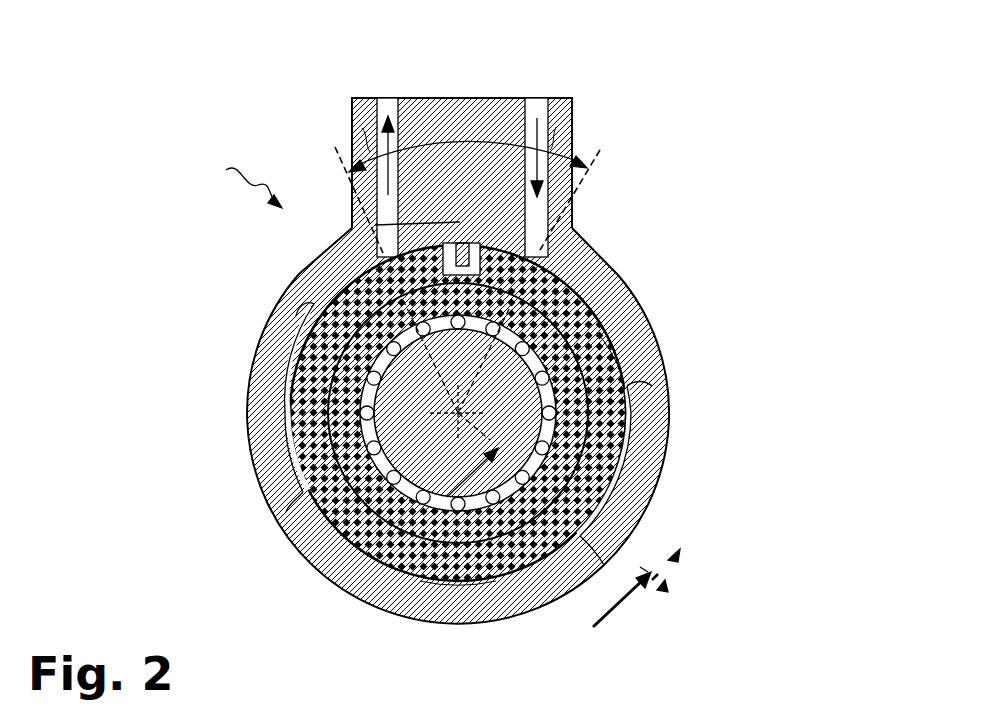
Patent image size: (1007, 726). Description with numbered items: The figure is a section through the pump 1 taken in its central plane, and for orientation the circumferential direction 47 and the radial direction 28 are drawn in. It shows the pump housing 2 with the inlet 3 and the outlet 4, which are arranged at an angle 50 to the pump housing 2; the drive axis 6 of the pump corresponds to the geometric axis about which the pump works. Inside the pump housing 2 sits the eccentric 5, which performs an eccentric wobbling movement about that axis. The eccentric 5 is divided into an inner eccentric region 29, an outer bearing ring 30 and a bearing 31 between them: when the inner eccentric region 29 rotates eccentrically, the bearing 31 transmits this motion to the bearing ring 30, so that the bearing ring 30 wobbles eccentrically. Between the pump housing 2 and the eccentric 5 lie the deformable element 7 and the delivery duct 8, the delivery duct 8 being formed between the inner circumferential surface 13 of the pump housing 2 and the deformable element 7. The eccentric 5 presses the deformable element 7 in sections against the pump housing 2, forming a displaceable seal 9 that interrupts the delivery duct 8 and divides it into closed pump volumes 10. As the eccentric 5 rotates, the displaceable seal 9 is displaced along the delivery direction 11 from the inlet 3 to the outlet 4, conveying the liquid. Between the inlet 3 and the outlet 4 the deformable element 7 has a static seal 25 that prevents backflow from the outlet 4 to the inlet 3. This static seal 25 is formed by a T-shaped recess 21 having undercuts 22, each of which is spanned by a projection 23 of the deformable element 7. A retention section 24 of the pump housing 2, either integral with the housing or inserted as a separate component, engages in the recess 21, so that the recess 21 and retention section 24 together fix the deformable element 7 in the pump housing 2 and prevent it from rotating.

The pump 1 is at (245, 174).
The pump housing 2 is at (533, 592).
The inlet 3 is at (542, 96).
The outlet 4 is at (385, 96).
The eccentric 5 is at (445, 548).
The drive axis 6 is at (597, 332).
The deformable element 7 is at (290, 503).
The delivery duct 8 is at (668, 394).
The displaceable seal 9 is at (455, 590).
The closed pump volumes 10 is at (628, 455).
The delivery direction 11 is at (362, 128).
The inner circumferential surface 13 is at (294, 320).
The recess 21 is at (550, 233).
The undercuts 22 is at (480, 248).
The projections 23 is at (350, 207).
The retention section 24 is at (455, 243).
The static seal 25 is at (460, 222).
The radial direction 28 is at (640, 567).
The inner eccentric region 29 is at (548, 355).
The bearing ring 30 is at (520, 395).
The bearing 31 is at (570, 390).
The circumferential direction 47 is at (665, 563).
The angle 50 is at (500, 142).